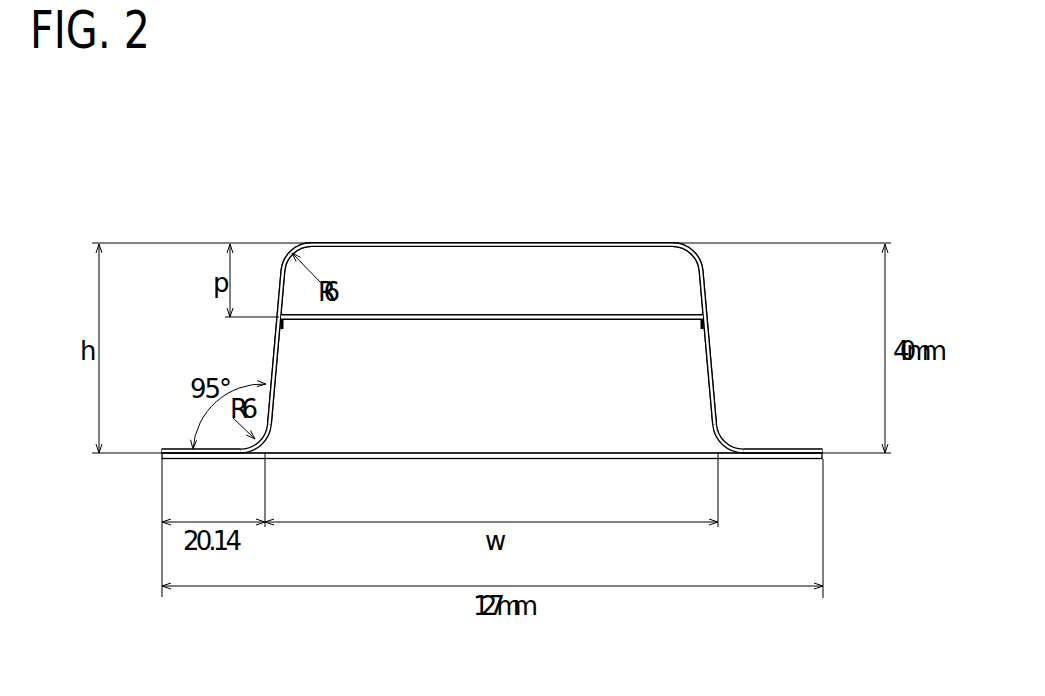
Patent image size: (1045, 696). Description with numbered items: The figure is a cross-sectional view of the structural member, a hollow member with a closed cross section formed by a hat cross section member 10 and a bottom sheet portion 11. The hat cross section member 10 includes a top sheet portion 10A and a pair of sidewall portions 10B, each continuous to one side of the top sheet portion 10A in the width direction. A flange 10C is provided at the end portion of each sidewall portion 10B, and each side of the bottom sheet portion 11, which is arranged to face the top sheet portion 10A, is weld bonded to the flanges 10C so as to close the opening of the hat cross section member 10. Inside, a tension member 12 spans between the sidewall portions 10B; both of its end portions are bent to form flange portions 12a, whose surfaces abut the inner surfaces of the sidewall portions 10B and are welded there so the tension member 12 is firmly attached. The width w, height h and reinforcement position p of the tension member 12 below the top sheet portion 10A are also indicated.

The hat cross section member 10 is at (598, 224).
The top sheet portion 10A is at (398, 241).
The sidewall portion 10B is at (271, 371).
The flange 10C is at (178, 449).
The bottom sheet portion 11 is at (482, 452).
The tension member 12 is at (482, 321).
The flange portion 12a is at (283, 324).